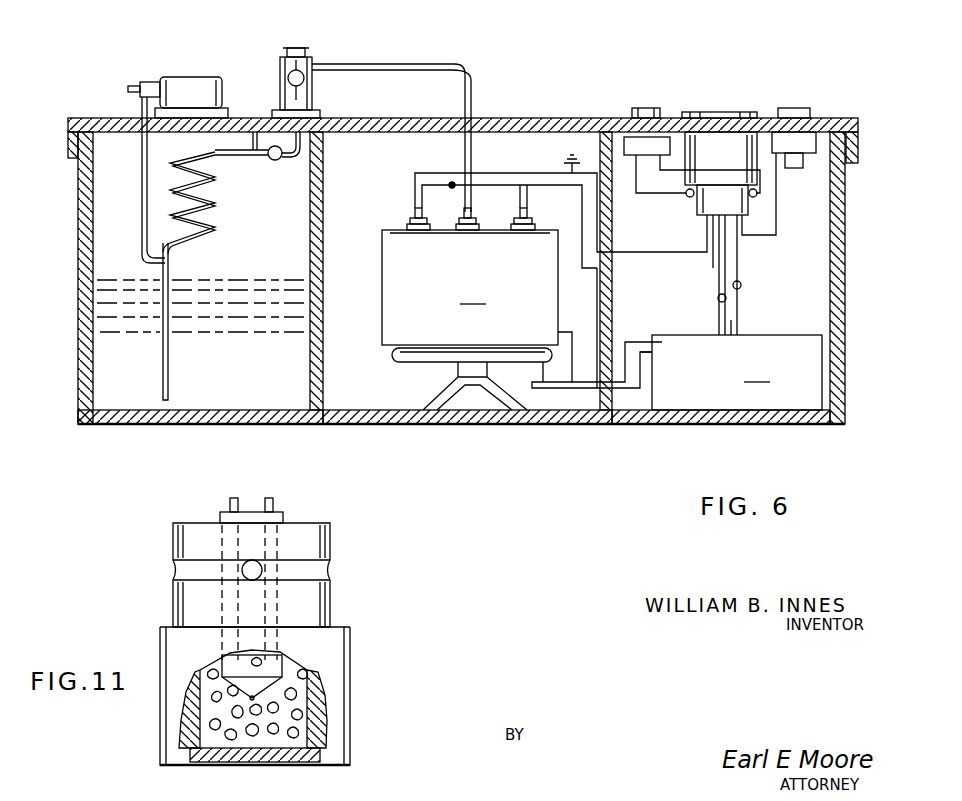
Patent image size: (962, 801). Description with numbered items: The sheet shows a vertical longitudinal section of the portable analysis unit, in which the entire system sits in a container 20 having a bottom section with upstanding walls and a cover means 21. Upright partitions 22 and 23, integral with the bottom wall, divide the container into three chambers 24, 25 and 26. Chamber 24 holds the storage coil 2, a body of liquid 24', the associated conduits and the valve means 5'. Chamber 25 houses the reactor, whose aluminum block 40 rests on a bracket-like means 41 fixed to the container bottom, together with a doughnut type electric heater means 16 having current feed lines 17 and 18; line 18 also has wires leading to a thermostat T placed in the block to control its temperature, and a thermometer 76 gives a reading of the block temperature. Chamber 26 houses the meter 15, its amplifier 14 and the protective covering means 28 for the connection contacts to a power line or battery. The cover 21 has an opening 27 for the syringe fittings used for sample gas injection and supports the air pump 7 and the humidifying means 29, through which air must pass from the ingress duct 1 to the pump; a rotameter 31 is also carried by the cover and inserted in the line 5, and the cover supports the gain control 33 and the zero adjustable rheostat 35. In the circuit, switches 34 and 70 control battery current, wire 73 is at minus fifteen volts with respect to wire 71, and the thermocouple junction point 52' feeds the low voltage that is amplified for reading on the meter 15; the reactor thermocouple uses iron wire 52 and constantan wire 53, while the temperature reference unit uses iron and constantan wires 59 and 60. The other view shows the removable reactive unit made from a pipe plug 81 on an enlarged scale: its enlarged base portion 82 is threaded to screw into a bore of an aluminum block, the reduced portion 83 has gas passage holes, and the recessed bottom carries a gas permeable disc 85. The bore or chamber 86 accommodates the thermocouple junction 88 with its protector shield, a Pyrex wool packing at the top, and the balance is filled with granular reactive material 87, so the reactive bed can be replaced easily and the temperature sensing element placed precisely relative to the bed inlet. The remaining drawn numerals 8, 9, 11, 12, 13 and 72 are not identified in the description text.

In FIG. 6, the ingress duct 1 is at (128, 90).
In FIG. 6, the storage coil 2 is at (185, 238).
In FIG. 6, the line 5 is at (135, 248).
In FIG. 6, the valve means 5' is at (364, 138).
In FIG. 6, the air pump 7 is at (186, 78).
In FIG. 11, the ball 8 is at (262, 566).
In FIG. 6, the tank 9 is at (95, 362).
In FIG. 6, the valve 11 is at (238, 156).
In FIG. 6, the electrical wire 12 is at (490, 173).
In FIG. 6, the electrical wire 13 is at (597, 284).
In FIG. 6, the amplifier 14 is at (708, 202).
In FIG. 6, the meter 15 is at (690, 118).
In FIG. 6, the electric heater means 16 is at (420, 348).
In FIG. 6, the current feed line 17 is at (548, 390).
In FIG. 6, the current feed line 18 is at (654, 344).
In FIG. 6, the container 20 is at (845, 430).
In FIG. 6, the cover means 21 is at (880, 100).
In FIG. 6, the upright partition 22 is at (310, 372).
In FIG. 6, the upright partition 23 is at (613, 326).
In FIG. 6, the chamber 24 is at (200, 433).
In FIG. 6, the body of liquid 24' is at (201, 286).
In FIG. 6, the chamber 25 is at (400, 412).
In FIG. 6, the chamber 26 is at (634, 412).
In FIG. 6, the opening 27 is at (262, 98).
In FIG. 6, the protective covering means 28 is at (737, 372).
In FIG. 6, the humidifying means 29 is at (150, 82).
In FIG. 6, the rotameter 31 is at (306, 60).
In FIG. 6, the gain control 33 is at (650, 108).
In FIG. 6, the switch 34 is at (718, 297).
In FIG. 6, the zero adjustable rheostat 35 is at (822, 86).
In FIG. 6, the aluminum block 40 is at (470, 287).
In FIG. 6, the bracket-like means 41 is at (500, 406).
In FIG. 6, the iron wire 52 is at (396, 204).
In FIG. 11, the iron wire 52 is at (213, 498).
In FIG. 6, the thermocouple junction point 52' is at (420, 164).
In FIG. 6, the constantan wire 53 is at (436, 196).
In FIG. 11, the constantan wire 53 is at (273, 502).
In FIG. 6, the iron wire 59 is at (518, 204).
In FIG. 6, the constantan wire 60 is at (528, 204).
In FIG. 6, the switch 70 is at (741, 285).
In FIG. 6, the wire 71 is at (730, 336).
In FIG. 6, the lead 72 is at (738, 306).
In FIG. 6, the wire 73 is at (720, 306).
In FIG. 6, the thermometer 76 is at (436, 232).
In FIG. 6, the thermostat T is at (558, 332).
In FIG. 11, the pipe plug 81 is at (350, 632).
In FIG. 11, the enlarged base portion 82 is at (345, 668).
In FIG. 11, the reduced portion 83 is at (325, 602).
In FIG. 11, the gas permeable disc 85 is at (196, 764).
In FIG. 11, the bore or chamber 86 is at (320, 752).
In FIG. 11, the granular reactive material 87 is at (264, 752).
In FIG. 11, the thermocouple junction 88 is at (240, 752).